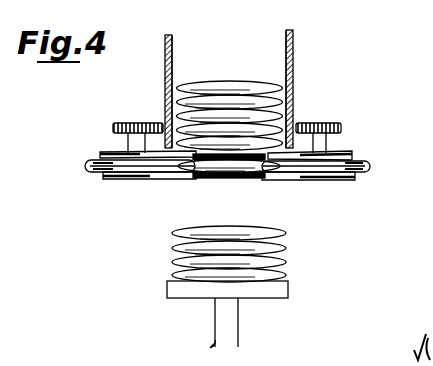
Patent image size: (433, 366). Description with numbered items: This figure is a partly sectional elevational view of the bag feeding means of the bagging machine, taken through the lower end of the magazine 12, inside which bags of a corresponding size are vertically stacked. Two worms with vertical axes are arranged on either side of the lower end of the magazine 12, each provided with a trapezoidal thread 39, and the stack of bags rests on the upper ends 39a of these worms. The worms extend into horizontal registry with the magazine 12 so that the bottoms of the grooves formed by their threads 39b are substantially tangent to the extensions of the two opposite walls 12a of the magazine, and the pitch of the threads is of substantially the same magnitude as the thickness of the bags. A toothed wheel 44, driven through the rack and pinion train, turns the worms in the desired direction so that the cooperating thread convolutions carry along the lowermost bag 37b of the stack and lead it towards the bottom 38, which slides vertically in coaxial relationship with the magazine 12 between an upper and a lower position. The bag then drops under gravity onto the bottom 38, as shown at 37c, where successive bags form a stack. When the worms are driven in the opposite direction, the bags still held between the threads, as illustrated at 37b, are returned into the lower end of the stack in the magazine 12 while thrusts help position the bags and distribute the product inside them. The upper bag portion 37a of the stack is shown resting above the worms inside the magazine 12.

The magazine 12 is at (294, 55).
The opposite walls of the magazine 12a is at (173, 52).
The upper spring portion 37a is at (284, 104).
The lowermost bag 37b is at (214, 171).
The dropped bag 37c is at (285, 257).
The bottom 38 is at (262, 294).
The trapezoidal thread 39 is at (85, 165).
The upper ends of the worms 39a is at (360, 148).
The threads forming the grooves 39b is at (298, 179).
The toothed wheel 44 is at (114, 126).